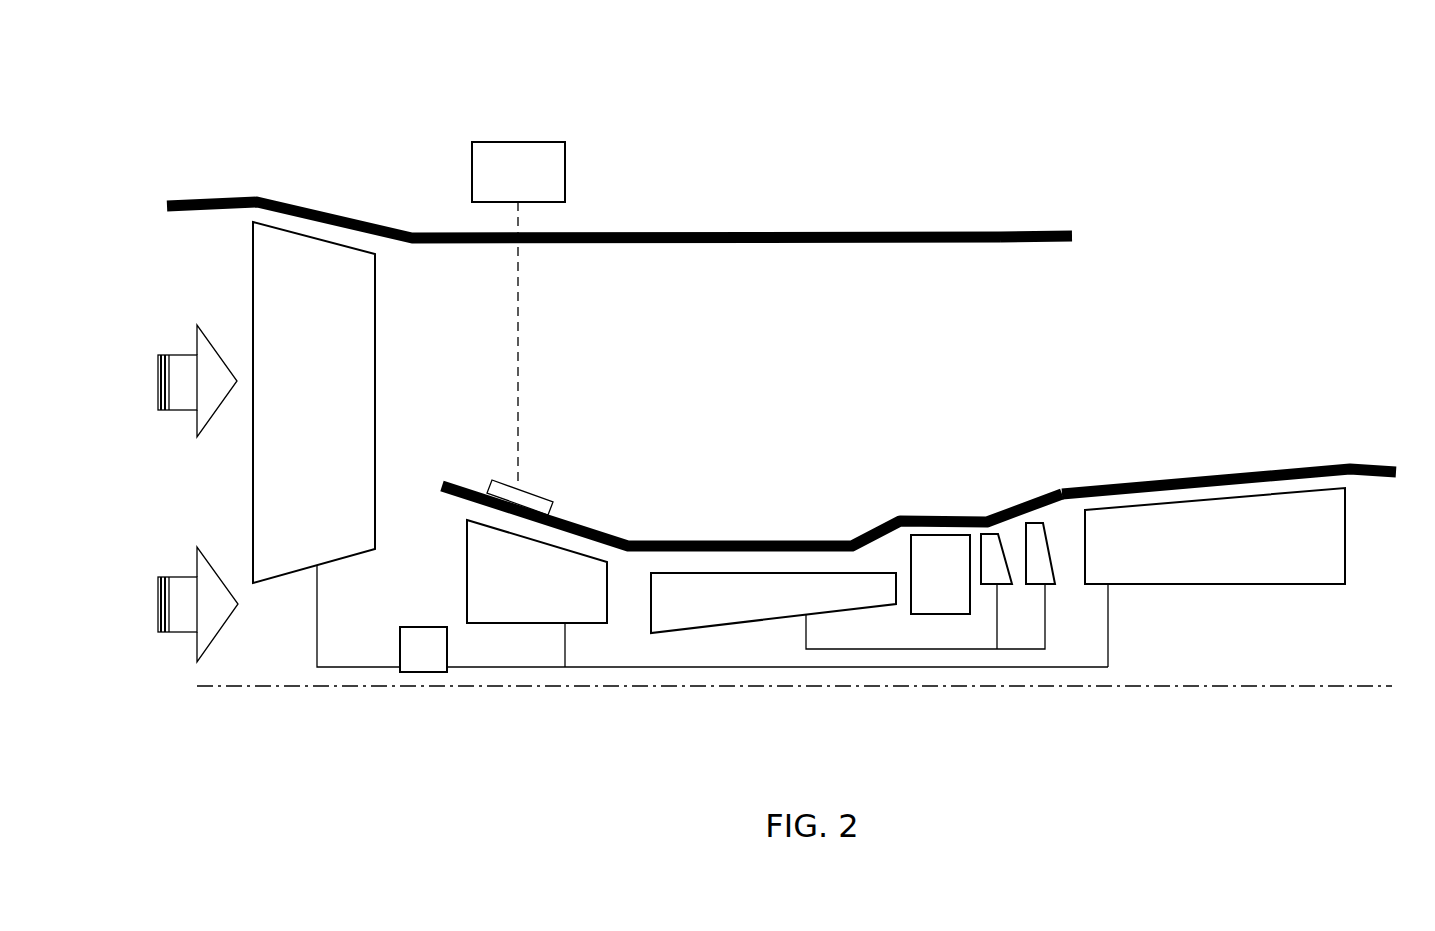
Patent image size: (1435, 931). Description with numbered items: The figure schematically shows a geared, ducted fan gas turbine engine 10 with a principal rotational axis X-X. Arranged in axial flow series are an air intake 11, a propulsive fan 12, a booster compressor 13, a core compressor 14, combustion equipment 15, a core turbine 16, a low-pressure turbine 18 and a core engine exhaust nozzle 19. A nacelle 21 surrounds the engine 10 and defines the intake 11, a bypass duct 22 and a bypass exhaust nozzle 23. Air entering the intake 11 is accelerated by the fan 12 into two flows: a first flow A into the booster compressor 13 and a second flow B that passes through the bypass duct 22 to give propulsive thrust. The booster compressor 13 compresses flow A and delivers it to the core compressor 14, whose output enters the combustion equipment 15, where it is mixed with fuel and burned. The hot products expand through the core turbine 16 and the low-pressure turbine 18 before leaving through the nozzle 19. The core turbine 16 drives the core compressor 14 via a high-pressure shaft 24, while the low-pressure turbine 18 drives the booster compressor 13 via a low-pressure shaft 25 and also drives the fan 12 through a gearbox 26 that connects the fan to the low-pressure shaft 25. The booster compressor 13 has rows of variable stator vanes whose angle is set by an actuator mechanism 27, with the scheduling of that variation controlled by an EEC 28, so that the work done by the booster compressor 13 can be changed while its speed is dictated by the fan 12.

The geared, ducted fan gas turbine engine 10 is at (341, 125).
The air intake 11 is at (207, 513).
The propulsive fan 12 is at (330, 416).
The booster compressor 13 is at (554, 603).
The core compressor 14 is at (721, 614).
The combustion equipment 15 is at (957, 586).
The core turbine 16 is at (989, 534).
The low-pressure turbine 18 is at (1198, 558).
The core engine exhaust nozzle 19 is at (1380, 462).
The nacelle 21 is at (865, 231).
The bypass duct 22 is at (731, 386).
The bypass exhaust nozzle 23 is at (1075, 231).
The high-pressure shaft 24 is at (917, 650).
The low-pressure shaft 25 is at (623, 668).
The gearbox 26 is at (418, 626).
The actuator mechanism 27 is at (552, 503).
The EEC 28 is at (535, 185).